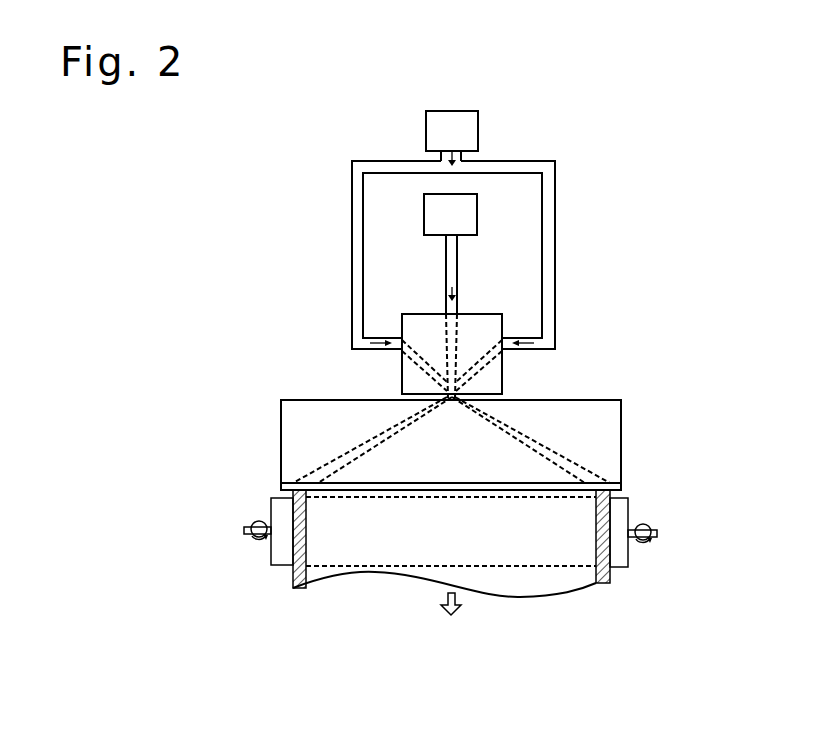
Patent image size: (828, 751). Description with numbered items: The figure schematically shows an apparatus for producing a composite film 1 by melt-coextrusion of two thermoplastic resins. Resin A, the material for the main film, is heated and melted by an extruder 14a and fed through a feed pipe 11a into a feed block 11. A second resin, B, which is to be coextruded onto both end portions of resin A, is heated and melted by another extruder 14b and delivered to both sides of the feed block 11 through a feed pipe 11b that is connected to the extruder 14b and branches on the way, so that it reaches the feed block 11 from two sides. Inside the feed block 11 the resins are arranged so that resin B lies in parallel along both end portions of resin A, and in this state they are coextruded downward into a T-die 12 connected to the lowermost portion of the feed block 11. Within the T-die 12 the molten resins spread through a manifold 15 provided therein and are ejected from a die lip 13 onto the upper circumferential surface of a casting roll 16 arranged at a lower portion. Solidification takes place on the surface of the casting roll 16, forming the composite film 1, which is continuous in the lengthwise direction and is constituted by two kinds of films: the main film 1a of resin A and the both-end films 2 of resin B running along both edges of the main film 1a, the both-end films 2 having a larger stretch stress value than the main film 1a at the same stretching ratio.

The composite film 1 is at (367, 600).
The main film 1a is at (513, 598).
The both-end films 2 is at (292, 588).
The feed block 11 is at (502, 379).
The feed pipe 11a is at (458, 251).
The feed pipe 11b is at (555, 296).
The T-die 12 is at (621, 451).
The die lip 13 is at (621, 486).
The extruder 14a is at (477, 213).
The extruder 14b is at (478, 127).
The manifold 15 is at (527, 437).
The casting roll 16 is at (628, 553).